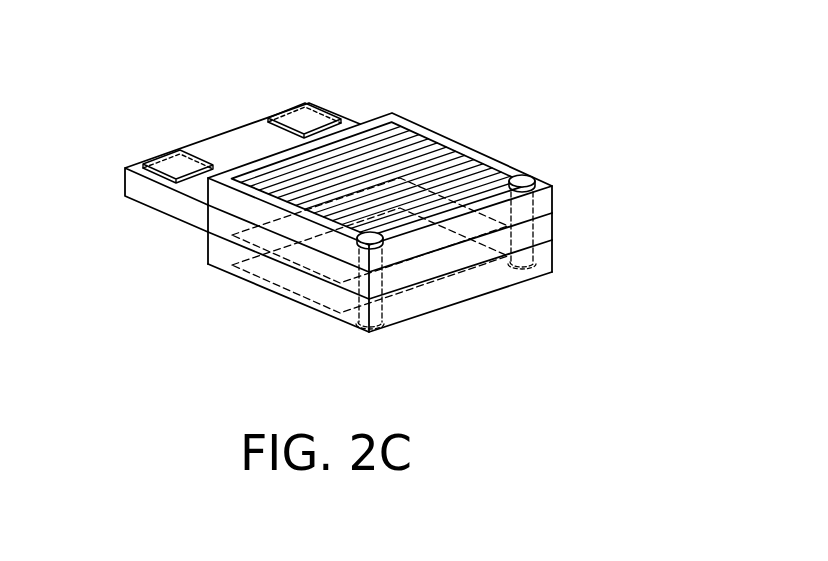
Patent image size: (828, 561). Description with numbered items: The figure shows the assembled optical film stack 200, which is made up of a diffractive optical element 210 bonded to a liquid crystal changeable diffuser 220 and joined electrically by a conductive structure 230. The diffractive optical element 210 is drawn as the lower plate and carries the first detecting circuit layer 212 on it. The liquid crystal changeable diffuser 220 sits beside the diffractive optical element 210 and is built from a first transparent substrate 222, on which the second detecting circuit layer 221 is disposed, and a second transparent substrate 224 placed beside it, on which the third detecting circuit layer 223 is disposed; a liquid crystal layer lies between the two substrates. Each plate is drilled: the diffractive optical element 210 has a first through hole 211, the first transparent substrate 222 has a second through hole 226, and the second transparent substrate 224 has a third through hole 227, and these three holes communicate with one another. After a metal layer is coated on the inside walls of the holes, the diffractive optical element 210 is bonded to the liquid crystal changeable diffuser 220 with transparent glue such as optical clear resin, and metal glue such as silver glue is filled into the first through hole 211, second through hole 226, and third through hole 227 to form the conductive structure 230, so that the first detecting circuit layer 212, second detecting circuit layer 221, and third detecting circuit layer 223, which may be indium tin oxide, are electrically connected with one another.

The optical film stack 200 is at (370, 243).
The diffractive optical element 210 is at (423, 295).
The first through hole 211 is at (552, 264).
The first detecting circuit layer 212 is at (338, 298).
The liquid crystal changeable diffuser 220 is at (348, 220).
The second detecting circuit layer 221 is at (349, 258).
The first transparent substrate 222 is at (138, 185).
The third detecting circuit layer 223 is at (442, 153).
The second transparent substrate 224 is at (196, 188).
The second through hole 226 is at (361, 201).
The third through hole 227 is at (423, 189).
The conductive structure 230 is at (385, 233).